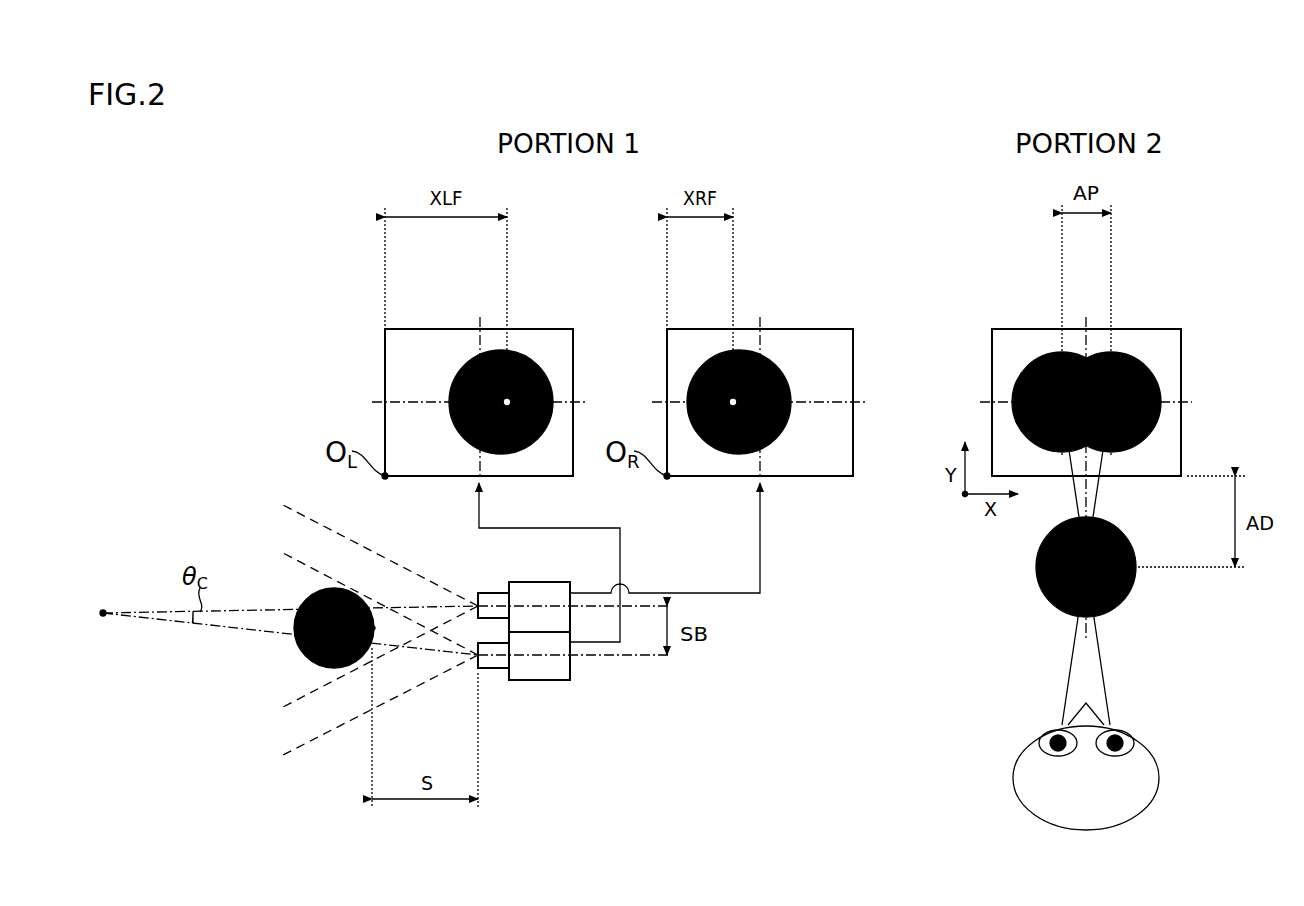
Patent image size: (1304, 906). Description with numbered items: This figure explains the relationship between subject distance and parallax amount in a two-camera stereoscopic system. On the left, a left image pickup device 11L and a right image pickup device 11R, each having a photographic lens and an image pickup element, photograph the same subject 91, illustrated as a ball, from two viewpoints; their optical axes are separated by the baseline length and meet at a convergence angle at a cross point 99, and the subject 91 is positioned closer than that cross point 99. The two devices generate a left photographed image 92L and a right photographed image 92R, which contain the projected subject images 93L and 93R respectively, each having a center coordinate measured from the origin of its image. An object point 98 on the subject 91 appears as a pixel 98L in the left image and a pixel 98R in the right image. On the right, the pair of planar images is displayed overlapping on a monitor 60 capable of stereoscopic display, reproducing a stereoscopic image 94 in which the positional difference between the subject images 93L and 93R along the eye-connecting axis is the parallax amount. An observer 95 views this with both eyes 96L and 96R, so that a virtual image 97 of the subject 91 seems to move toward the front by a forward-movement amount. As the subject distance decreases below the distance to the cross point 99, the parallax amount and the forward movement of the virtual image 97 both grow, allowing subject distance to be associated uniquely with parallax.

The right image pickup device 11R is at (540, 592).
The left image pickup device 11L is at (540, 678).
The subject 91 is at (306, 601).
The left photographed image 92L is at (548, 335).
The right photographed image 92R is at (810, 335).
The left subject image 93L is at (520, 445).
The right subject image 93R is at (780, 432).
The stereoscopic image 94 is at (1187, 352).
The monitor 60 is at (1187, 435).
The observer 95 is at (1152, 777).
The left eye 96L is at (1045, 732).
The right eye 96R is at (1157, 708).
The virtual image 97 is at (1036, 568).
The object point 98 is at (372, 626).
The left pixel 98L is at (548, 385).
The right pixel 98R is at (693, 381).
The cross point 99 is at (104, 610).